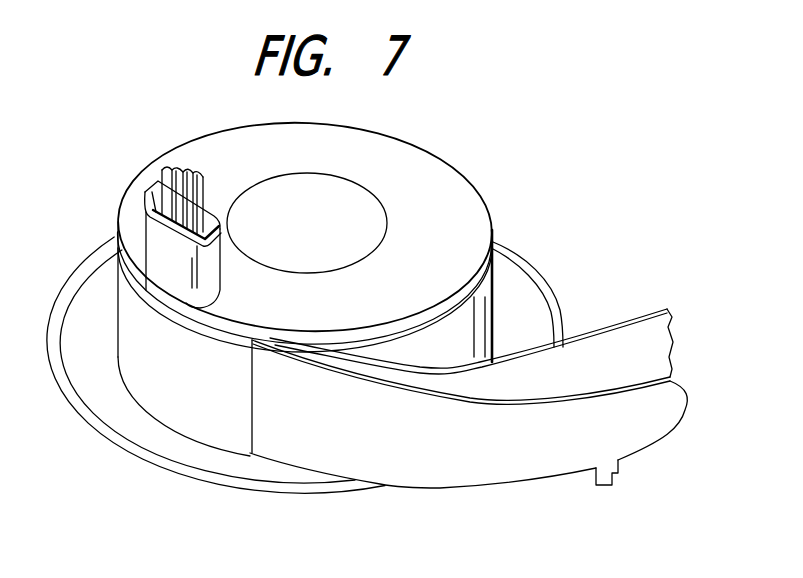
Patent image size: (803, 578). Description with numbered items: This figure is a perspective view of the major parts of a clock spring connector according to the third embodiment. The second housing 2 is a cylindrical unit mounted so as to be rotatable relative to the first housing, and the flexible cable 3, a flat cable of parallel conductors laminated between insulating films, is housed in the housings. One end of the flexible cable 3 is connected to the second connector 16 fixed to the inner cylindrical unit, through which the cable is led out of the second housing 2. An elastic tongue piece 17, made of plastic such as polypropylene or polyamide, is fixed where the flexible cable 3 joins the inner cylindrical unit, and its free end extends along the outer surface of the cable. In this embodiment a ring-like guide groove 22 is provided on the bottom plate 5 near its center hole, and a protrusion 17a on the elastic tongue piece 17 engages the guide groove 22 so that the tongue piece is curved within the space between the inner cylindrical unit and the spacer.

The second housing 2 is at (428, 173).
The flexible cable 3 is at (647, 316).
The bottom plate 5 is at (142, 438).
The second connector 16 is at (155, 226).
The elastic tongue piece 17 is at (393, 465).
The protrusion 17a is at (608, 487).
The guide groove 22 is at (542, 279).